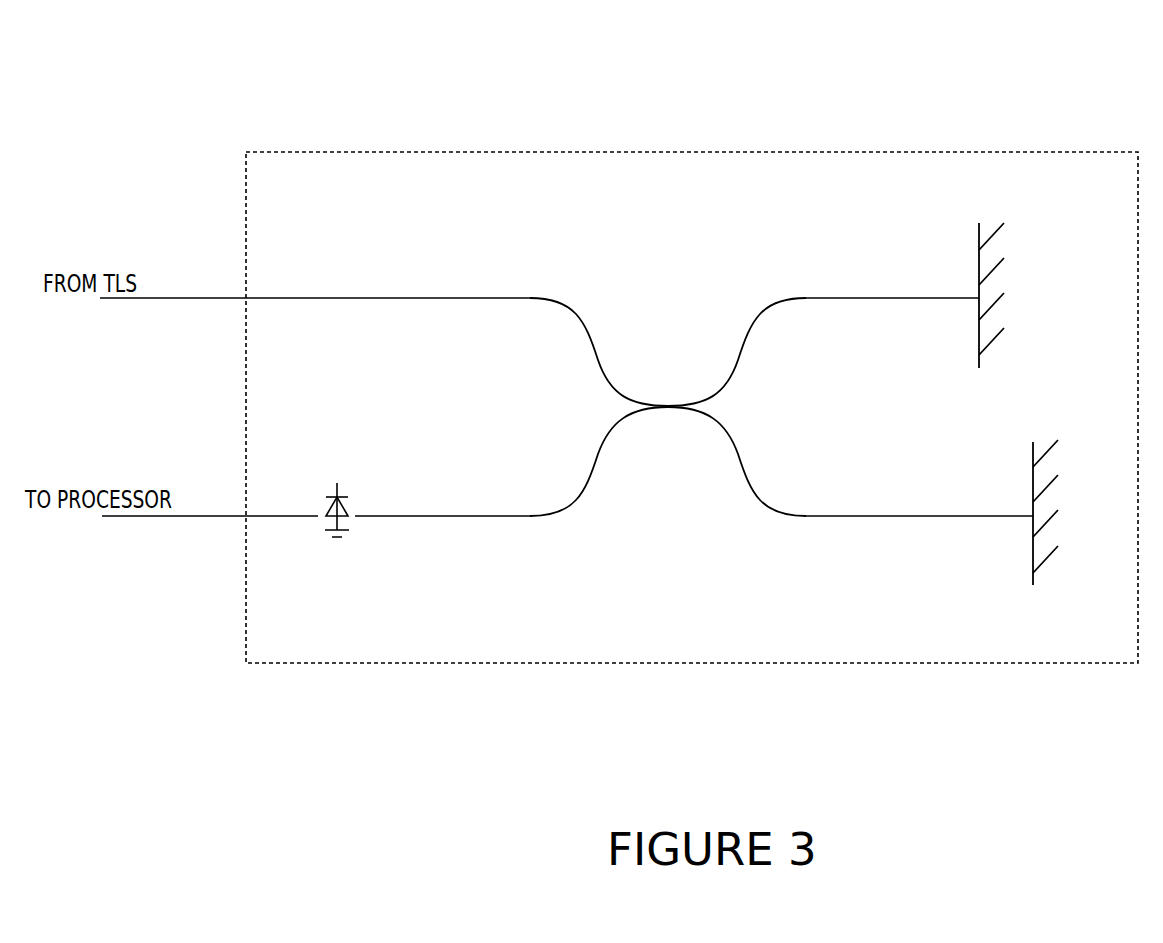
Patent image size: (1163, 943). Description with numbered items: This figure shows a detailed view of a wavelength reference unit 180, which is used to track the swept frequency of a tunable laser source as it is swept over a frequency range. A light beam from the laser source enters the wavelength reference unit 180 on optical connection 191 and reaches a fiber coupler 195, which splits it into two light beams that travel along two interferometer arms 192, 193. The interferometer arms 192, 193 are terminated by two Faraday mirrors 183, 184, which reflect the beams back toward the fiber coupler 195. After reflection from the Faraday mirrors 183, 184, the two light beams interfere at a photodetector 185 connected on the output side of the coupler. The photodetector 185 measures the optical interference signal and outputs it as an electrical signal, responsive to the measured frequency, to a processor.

The wavelength reference unit 180 is at (897, 112).
The optical connection 191 is at (355, 297).
The interferometer arm 193 is at (857, 295).
The interferometer arm 192 is at (925, 518).
The fiber coupler 195 is at (663, 409).
The Faraday mirror 183 is at (979, 344).
The Faraday mirror 184 is at (1033, 481).
The photodetector 185 is at (340, 493).